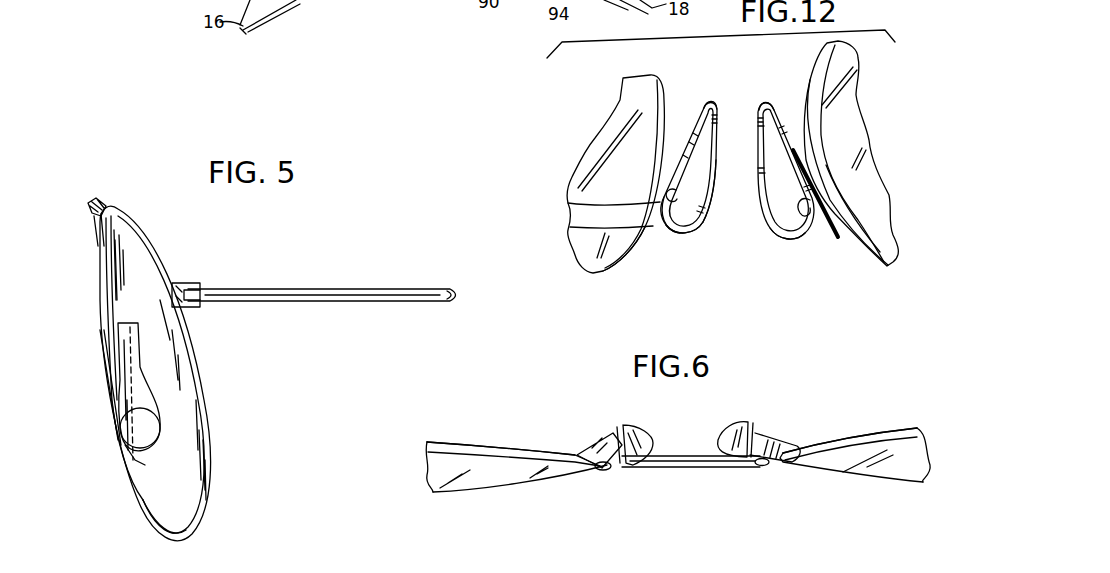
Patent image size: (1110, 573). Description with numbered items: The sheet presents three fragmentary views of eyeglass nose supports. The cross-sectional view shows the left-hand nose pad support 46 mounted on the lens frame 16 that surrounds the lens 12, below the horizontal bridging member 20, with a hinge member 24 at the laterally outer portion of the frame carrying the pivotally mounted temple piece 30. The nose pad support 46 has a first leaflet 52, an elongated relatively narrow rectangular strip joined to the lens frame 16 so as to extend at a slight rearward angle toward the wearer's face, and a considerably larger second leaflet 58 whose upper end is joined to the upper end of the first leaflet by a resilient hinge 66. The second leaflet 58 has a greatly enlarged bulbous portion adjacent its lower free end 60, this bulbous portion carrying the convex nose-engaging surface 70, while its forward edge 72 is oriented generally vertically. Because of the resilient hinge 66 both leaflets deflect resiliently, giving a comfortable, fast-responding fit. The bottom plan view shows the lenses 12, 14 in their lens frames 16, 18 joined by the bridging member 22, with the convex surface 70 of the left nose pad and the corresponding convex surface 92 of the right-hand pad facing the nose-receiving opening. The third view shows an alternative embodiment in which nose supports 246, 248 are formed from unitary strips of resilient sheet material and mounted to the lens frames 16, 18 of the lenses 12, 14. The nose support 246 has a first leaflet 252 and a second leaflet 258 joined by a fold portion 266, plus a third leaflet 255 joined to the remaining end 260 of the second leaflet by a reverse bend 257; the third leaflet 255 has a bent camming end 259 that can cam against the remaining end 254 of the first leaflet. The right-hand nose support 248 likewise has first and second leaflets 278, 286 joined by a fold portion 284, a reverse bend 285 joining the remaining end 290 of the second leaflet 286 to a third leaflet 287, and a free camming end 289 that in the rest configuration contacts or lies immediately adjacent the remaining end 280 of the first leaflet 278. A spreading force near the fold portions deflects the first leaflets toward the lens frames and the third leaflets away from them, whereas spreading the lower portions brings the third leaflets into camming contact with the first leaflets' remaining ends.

In FIG. 5, the lens 12 is at (143, 265).
In FIG. 12, the lens 12 is at (583, 150).
In FIG. 6, the lens 12 is at (512, 480).
In FIG. 12, the lens 14 is at (847, 145).
In FIG. 6, the lens 14 is at (872, 468).
In FIG. 5, the lens frame 16 is at (135, 503).
In FIG. 12, the lens frame 16 is at (598, 278).
In FIG. 6, the lens frame 16 is at (497, 450).
In FIG. 12, the lens frame 18 is at (890, 265).
In FIG. 6, the lens frame 18 is at (900, 433).
In FIG. 5, the horizontal bridging member 20 is at (108, 205).
In FIG. 5, the horizontal bridging member 22 is at (93, 224).
In FIG. 6, the horizontal bridging member 22 is at (693, 468).
In FIG. 5, the hinge member 24 is at (190, 284).
In FIG. 5, the temple piece 30 is at (338, 292).
In FIG. 5, the nose pad support 46 is at (122, 312).
In FIG. 5, the first leaflet 52 is at (112, 397).
In FIG. 6, the first leaflet 52 is at (610, 470).
In FIG. 5, the second leaflet 58 is at (140, 392).
In FIG. 5, the lower free end 60 is at (147, 453).
In FIG. 6, the lower free end 60 is at (617, 428).
In FIG. 5, the resilient hinge 66 is at (134, 270).
In FIG. 5, the convex surface 70 is at (152, 420).
In FIG. 6, the convex surface 70 is at (630, 427).
In FIG. 5, the forward edge 72 is at (110, 418).
In FIG. 6, the convex surface 92 is at (742, 420).
In FIG. 12, the nose support 246 is at (718, 92).
In FIG. 12, the nose support 248 is at (754, 90).
In FIG. 12, the first leaflet 252 is at (668, 144).
In FIG. 12, the remaining end 254 is at (570, 227).
In FIG. 12, the third leaflet 255 is at (662, 238).
In FIG. 12, the reverse bend 257 is at (680, 234).
In FIG. 12, the second leaflet 258 is at (724, 182).
In FIG. 12, the bent camming end 259 is at (568, 203).
In FIG. 12, the remaining end 260 is at (697, 219).
In FIG. 12, the fold portion 266 is at (705, 107).
In FIG. 12, the first leaflet 278 is at (800, 145).
In FIG. 12, the remaining end 280 is at (835, 216).
In FIG. 12, the fold portion 284 is at (766, 107).
In FIG. 12, the reverse bend 285 is at (796, 240).
In FIG. 12, the second leaflet 286 is at (745, 160).
In FIG. 12, the third leaflet 287 is at (815, 246).
In FIG. 12, the free camming end 289 is at (800, 198).
In FIG. 12, the remaining end 290 is at (782, 234).